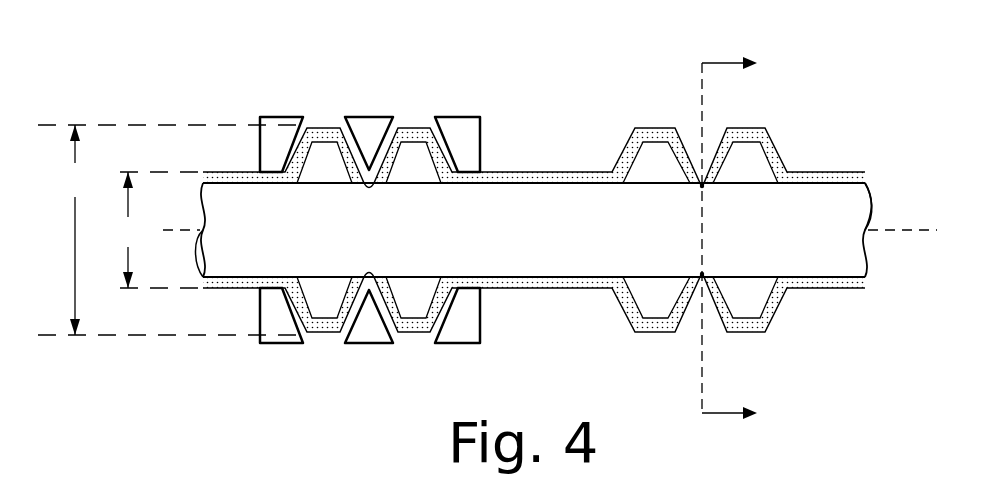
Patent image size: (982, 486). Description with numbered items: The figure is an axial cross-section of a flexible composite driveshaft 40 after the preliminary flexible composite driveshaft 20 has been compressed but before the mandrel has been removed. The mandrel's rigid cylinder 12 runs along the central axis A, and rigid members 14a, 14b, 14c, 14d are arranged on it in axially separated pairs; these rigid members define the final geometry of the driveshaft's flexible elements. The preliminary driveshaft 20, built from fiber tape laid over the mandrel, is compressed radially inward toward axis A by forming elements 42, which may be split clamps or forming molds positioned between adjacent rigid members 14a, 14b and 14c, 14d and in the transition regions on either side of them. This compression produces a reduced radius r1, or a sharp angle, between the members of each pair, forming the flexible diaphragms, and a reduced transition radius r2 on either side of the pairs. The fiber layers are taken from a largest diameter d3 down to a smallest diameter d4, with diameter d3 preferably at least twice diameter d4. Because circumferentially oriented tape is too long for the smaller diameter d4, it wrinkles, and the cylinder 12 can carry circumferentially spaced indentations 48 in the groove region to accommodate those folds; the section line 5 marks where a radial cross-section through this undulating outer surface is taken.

The rigid cylinder 12 is at (549, 243).
The preliminary flexible composite driveshaft 20 is at (785, 162).
The flexible composite driveshaft 40 is at (747, 125).
The rigid member 14a is at (322, 162).
The rigid member 14b is at (413, 163).
The rigid member 14c is at (655, 158).
The rigid member 14d is at (750, 292).
The forming element 42 is at (450, 120).
The indentation 48 is at (700, 196).
The section line 5- 5 is at (740, 240).
The axis A is at (900, 231).
The largest diameter d3 is at (169, 230).
The smallest diameter d4 is at (157, 230).
The reduced radius r1 is at (700, 286).
The reduced transition radius r2 is at (612, 289).